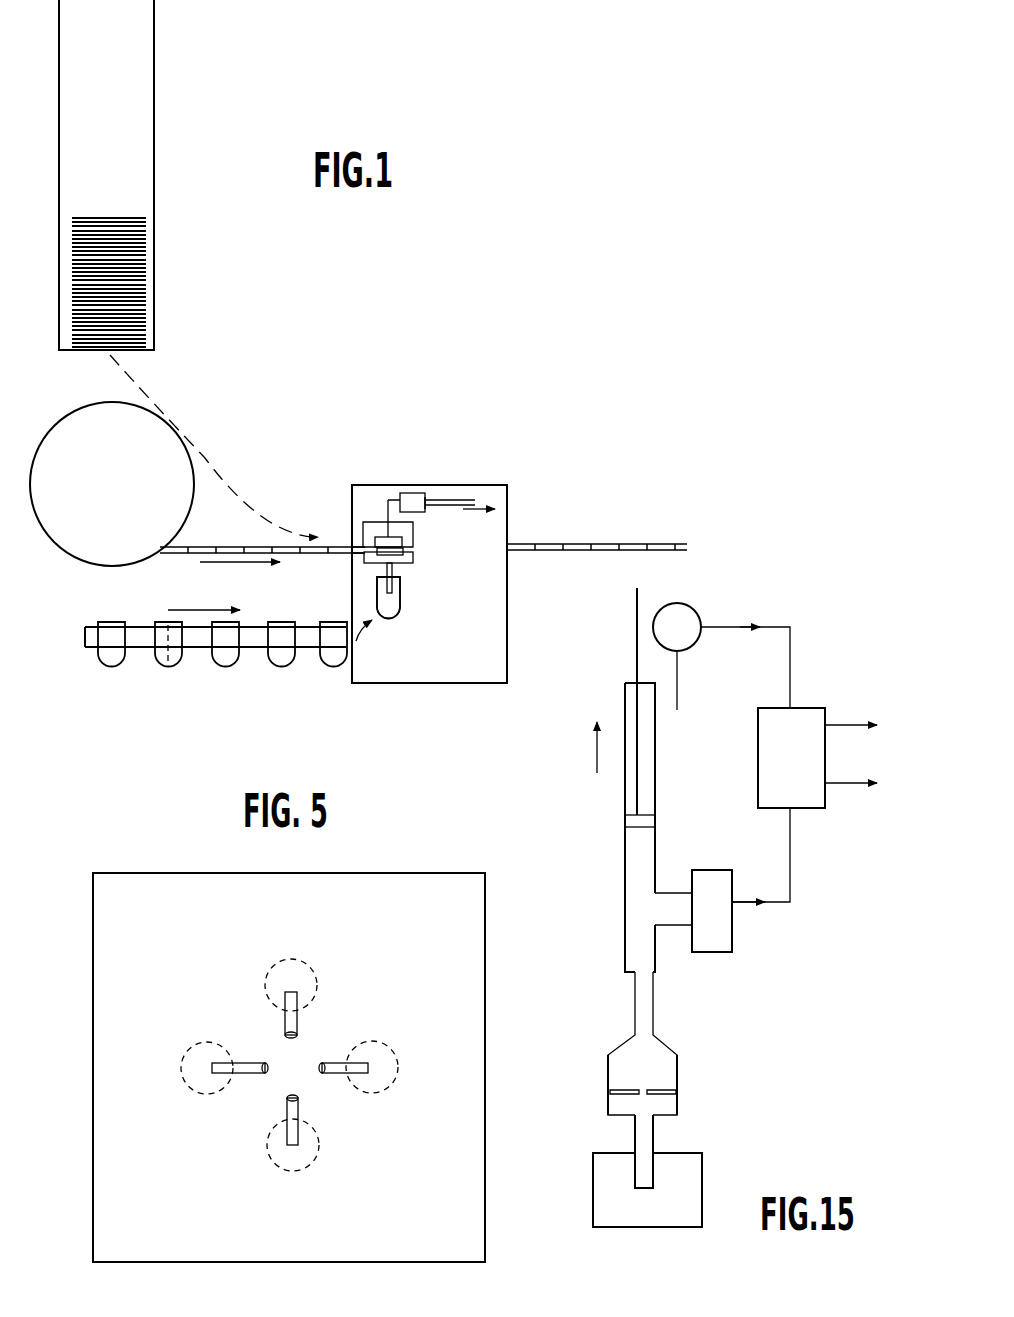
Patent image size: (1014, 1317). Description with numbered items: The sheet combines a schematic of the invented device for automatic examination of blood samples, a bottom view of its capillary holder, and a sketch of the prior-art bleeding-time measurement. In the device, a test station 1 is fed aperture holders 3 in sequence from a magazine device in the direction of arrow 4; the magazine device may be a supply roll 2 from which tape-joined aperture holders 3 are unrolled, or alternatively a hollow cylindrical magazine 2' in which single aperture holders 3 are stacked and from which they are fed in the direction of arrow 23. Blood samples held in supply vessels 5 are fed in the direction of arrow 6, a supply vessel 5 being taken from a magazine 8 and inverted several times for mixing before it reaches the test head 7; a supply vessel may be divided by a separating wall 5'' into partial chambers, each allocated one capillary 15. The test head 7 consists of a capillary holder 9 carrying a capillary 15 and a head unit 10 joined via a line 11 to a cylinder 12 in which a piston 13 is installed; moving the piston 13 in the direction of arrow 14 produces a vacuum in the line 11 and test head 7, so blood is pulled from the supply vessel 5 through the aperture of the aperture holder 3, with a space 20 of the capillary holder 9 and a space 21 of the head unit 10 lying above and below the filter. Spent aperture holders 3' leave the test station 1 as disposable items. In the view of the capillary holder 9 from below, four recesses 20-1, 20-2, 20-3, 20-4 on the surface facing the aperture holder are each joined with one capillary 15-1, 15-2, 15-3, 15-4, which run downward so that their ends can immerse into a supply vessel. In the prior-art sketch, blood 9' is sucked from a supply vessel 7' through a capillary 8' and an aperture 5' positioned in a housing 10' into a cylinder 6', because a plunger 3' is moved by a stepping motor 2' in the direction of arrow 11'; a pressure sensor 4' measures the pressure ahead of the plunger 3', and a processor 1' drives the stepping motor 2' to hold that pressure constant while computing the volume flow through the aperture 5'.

In FIG. 1, the test station 1 is at (449, 512).
In FIG. 1, the supply roll 2 is at (108, 485).
In FIG. 1, the hollow cylindrical magazine 2' is at (132, 175).
In FIG. 15, the hollow cylindrical magazine 2' is at (721, 637).
In FIG. 1, the aperture holder 3 is at (266, 386).
In FIG. 1, the spent aperture holder 3' is at (604, 520).
In FIG. 15, the spent aperture holder 3' is at (609, 830).
In FIG. 1, the arrow 4 is at (240, 579).
In FIG. 1, the supply vessel 5 is at (253, 641).
In FIG. 1, the separating wall 5'' is at (188, 665).
In FIG. 1, the arrow 6 is at (204, 586).
In FIG. 1, the test head 7 is at (336, 580).
In FIG. 1, the magazine 8 is at (188, 666).
In FIG. 1, the capillary holder 9 is at (412, 572).
In FIG. 5, the capillary holder 9 is at (289, 1042).
In FIG. 1, the head unit 10 is at (414, 531).
In FIG. 1, the line 11 is at (389, 486).
In FIG. 1, the cylinder 12 is at (416, 493).
In FIG. 1, the piston 13 is at (455, 496).
In FIG. 1, the arrow 14 is at (480, 500).
In FIG. 1, the capillary 15 is at (400, 585).
In FIG. 1, the space 20 is at (400, 568).
In FIG. 1, the space 21 is at (380, 538).
In FIG. 1, the arrow 23 is at (214, 470).
In FIG. 5, the recess 20-1 is at (310, 963).
In FIG. 5, the recess 20-2 is at (390, 1044).
In FIG. 5, the recess 20-3 is at (269, 1162).
In FIG. 5, the recess 20-4 is at (187, 1047).
In FIG. 5, the capillary 15-1 is at (300, 1025).
In FIG. 5, the capillary 15-2 is at (340, 1075).
In FIG. 5, the capillary 15-3 is at (298, 1108).
In FIG. 5, the capillary 15-4 is at (243, 1075).
In FIG. 15, the processor 1' is at (795, 758).
In FIG. 15, the pressure sensor 4' is at (741, 882).
In FIG. 15, the aperture 5' is at (666, 1073).
In FIG. 15, the cylinder 6' is at (630, 899).
In FIG. 15, the supply vessel 7' is at (672, 1190).
In FIG. 15, the capillary 8' is at (678, 1151).
In FIG. 15, the blood 9' is at (620, 1192).
In FIG. 15, the housing 10' is at (612, 1083).
In FIG. 15, the arrow 11' is at (584, 701).